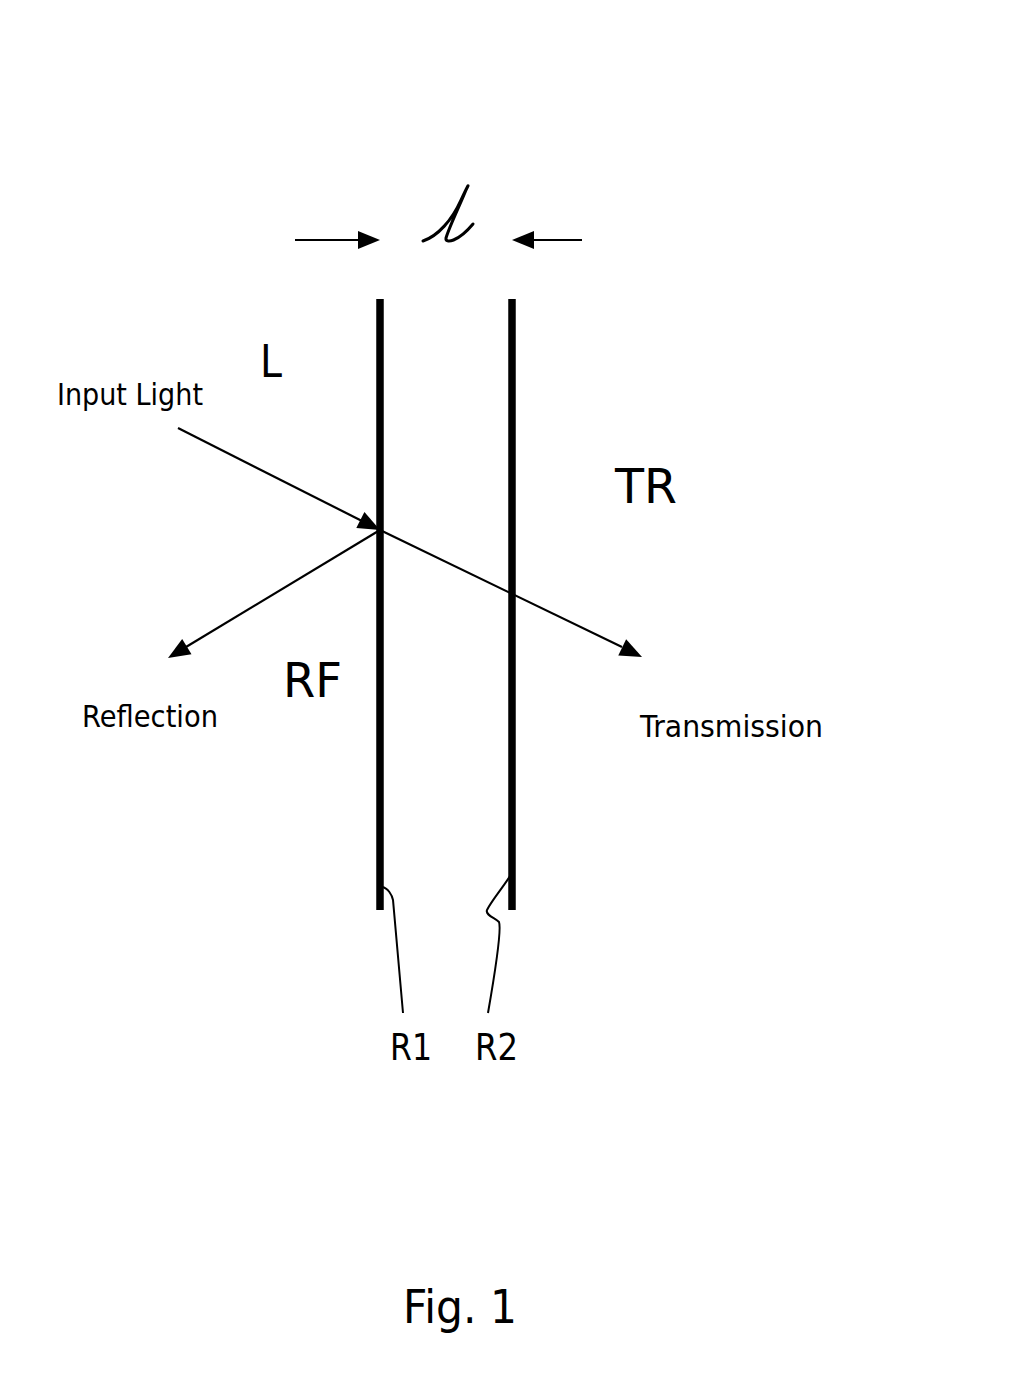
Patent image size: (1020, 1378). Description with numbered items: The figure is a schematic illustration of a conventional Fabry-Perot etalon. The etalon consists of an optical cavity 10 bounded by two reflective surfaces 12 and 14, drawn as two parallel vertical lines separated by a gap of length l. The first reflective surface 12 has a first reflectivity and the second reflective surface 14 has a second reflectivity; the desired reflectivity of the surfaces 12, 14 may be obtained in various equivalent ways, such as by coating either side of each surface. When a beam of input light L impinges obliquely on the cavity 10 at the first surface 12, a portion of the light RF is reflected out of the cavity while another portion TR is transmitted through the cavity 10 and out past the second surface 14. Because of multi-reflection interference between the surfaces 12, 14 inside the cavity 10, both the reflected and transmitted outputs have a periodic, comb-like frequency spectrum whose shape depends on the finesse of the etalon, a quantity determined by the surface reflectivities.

The optical cavity 10 is at (680, 188).
The reflective surface 12 is at (380, 771).
The reflective surface 14 is at (513, 745).